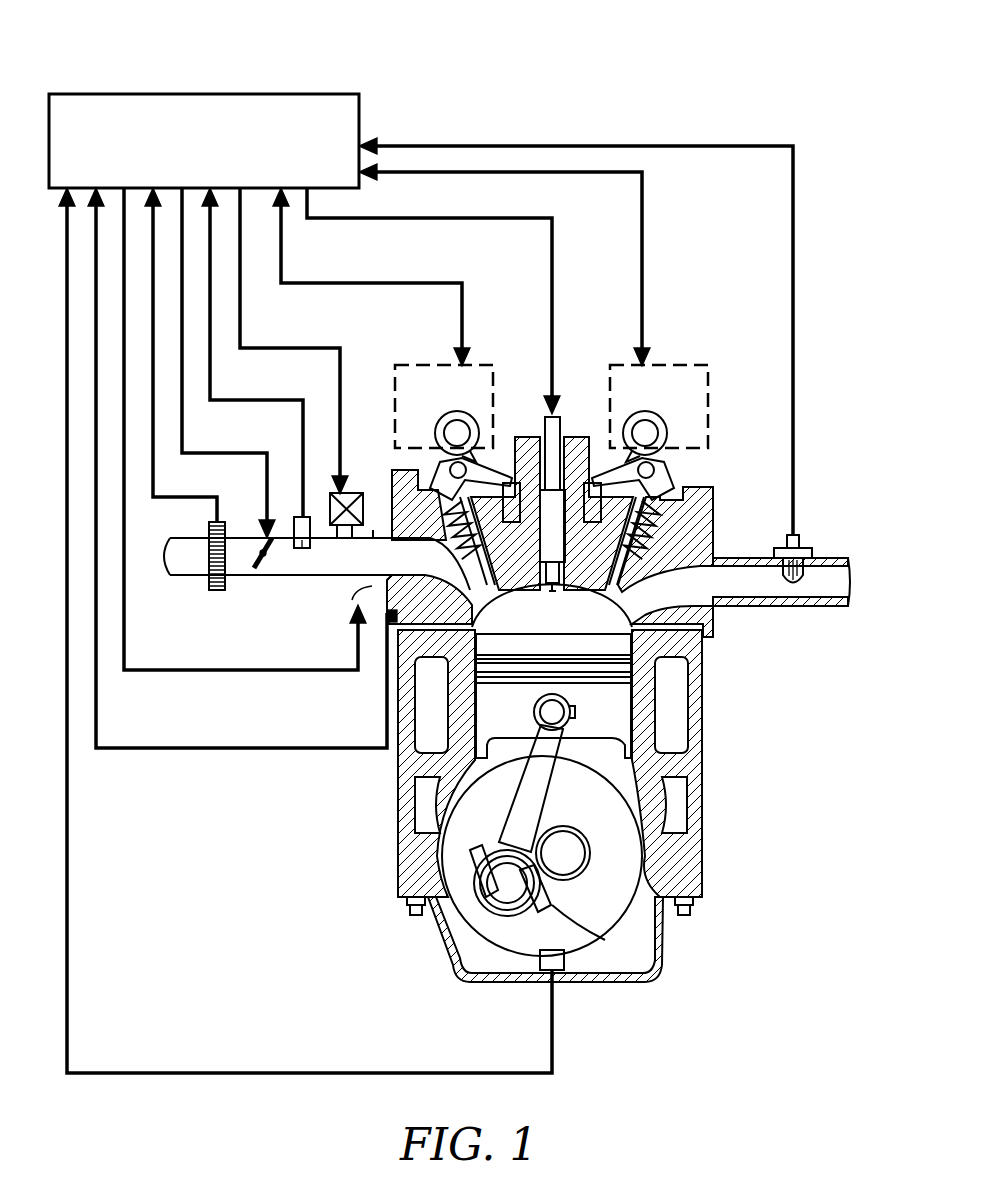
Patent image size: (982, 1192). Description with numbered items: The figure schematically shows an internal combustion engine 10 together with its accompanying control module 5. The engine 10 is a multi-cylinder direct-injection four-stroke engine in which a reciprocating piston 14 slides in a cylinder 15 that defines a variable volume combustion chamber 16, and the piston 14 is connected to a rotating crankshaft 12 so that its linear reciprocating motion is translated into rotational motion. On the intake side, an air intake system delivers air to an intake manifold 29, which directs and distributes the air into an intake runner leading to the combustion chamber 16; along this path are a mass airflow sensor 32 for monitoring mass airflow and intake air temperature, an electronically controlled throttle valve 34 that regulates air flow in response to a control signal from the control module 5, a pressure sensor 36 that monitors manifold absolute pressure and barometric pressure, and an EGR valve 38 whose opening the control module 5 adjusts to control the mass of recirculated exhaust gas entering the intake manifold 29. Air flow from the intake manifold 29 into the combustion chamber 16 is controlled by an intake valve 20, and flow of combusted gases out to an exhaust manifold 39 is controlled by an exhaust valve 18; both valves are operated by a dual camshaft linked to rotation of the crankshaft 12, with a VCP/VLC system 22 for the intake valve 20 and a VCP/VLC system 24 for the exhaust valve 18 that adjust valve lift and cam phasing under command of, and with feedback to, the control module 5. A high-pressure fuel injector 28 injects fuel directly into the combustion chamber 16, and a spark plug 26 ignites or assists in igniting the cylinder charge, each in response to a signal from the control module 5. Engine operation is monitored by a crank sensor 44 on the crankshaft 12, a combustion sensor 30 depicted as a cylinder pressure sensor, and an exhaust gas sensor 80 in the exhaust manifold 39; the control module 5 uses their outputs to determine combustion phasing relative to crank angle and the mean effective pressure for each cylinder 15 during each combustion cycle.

The control module 5 is at (204, 100).
The internal combustion engine 10 is at (593, 803).
The crankshaft 12 is at (577, 857).
The piston 14 is at (574, 712).
The cylinder 15 is at (613, 696).
The combustion chamber 16 is at (552, 605).
The exhaust valve 18 is at (638, 537).
The intake valve 20 is at (463, 530).
The VCP/VLC system 22 is at (402, 386).
The VCP/VLC system 24 is at (559, 374).
The spark plug 26 is at (465, 389).
The fuel injector 28 is at (248, 429).
The intake manifold 29 is at (280, 513).
The combustion sensor 30 is at (242, 468).
The mass airflow sensor 32 is at (185, 398).
The throttle valve 34 is at (228, 413).
The pressure sensor 36 is at (256, 406).
The EGR valve 38 is at (306, 402).
The exhaust manifold 39 is at (770, 542).
The crank sensor 44 is at (311, 630).
The exhaust gas sensor 80 is at (601, 360).